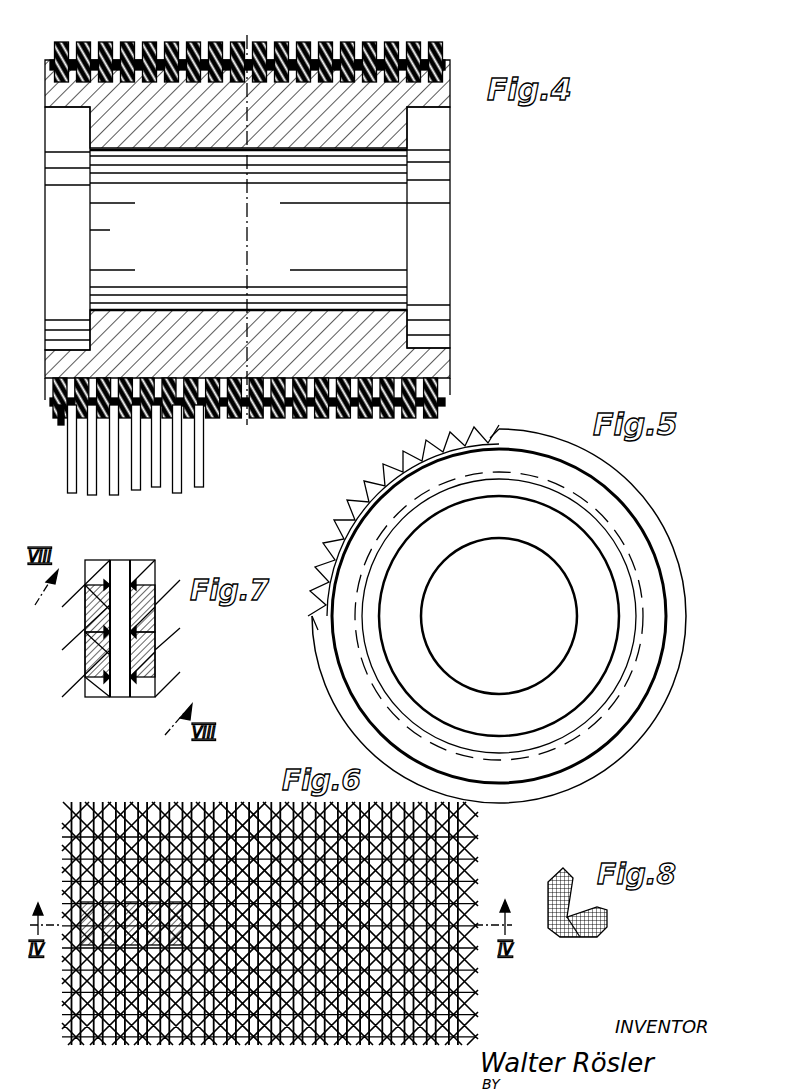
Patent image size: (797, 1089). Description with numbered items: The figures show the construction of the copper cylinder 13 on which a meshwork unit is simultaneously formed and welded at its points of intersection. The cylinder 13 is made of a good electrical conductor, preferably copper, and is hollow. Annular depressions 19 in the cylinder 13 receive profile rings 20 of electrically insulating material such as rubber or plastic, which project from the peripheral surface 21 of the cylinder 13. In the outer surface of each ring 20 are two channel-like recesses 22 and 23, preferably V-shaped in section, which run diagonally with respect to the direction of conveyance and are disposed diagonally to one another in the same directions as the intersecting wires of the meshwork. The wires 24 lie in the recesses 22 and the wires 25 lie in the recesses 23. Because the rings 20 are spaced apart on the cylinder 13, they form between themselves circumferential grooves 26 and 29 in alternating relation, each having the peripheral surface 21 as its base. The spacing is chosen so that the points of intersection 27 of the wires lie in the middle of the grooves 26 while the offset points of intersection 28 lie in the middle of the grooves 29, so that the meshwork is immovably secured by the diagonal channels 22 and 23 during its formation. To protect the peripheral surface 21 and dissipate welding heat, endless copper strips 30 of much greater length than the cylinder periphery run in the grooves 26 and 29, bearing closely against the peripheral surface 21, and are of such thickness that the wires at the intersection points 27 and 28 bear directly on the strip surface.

In FIG. 4, the cylinder 13 is at (110, 125).
In FIG. 5, the cylinder 13 is at (577, 585).
In FIG. 4, the annular depressions 19 is at (60, 378).
In FIG. 4, the profile rings 20 is at (58, 415).
In FIG. 5, the profile rings 20 is at (662, 552).
In FIG. 7, the profile rings 20 is at (88, 622).
In FIG. 6, the profile rings 20 is at (107, 812).
In FIG. 8, the profile rings 20 is at (550, 893).
In FIG. 4, the peripheral surface 21 is at (52, 403).
In FIG. 5, the peripheral surface 21 is at (660, 593).
In FIG. 4, the channel-like recess 22 is at (80, 423).
In FIG. 7, the channel-like recess 22 is at (85, 660).
In FIG. 8, the channel-like recess 22 is at (570, 928).
In FIG. 7, the channel-like recess 23 is at (145, 655).
In FIG. 7, the wires 24 is at (85, 690).
In FIG. 7, the wires 25 is at (158, 672).
In FIG. 4, the grooves 26 is at (140, 46).
In FIG. 7, the grooves 26 is at (120, 566).
In FIG. 6, the grooves 26 is at (138, 808).
In FIG. 7, the points of intersection 27 is at (125, 635).
In FIG. 6, the points of intersection 27 is at (148, 812).
In FIG. 6, the points of intersection 28 is at (208, 805).
In FIG. 6, the grooves 29 is at (165, 810).
In FIG. 4, the copper strips 30 is at (207, 46).
In FIG. 6, the copper strips 30 is at (265, 923).